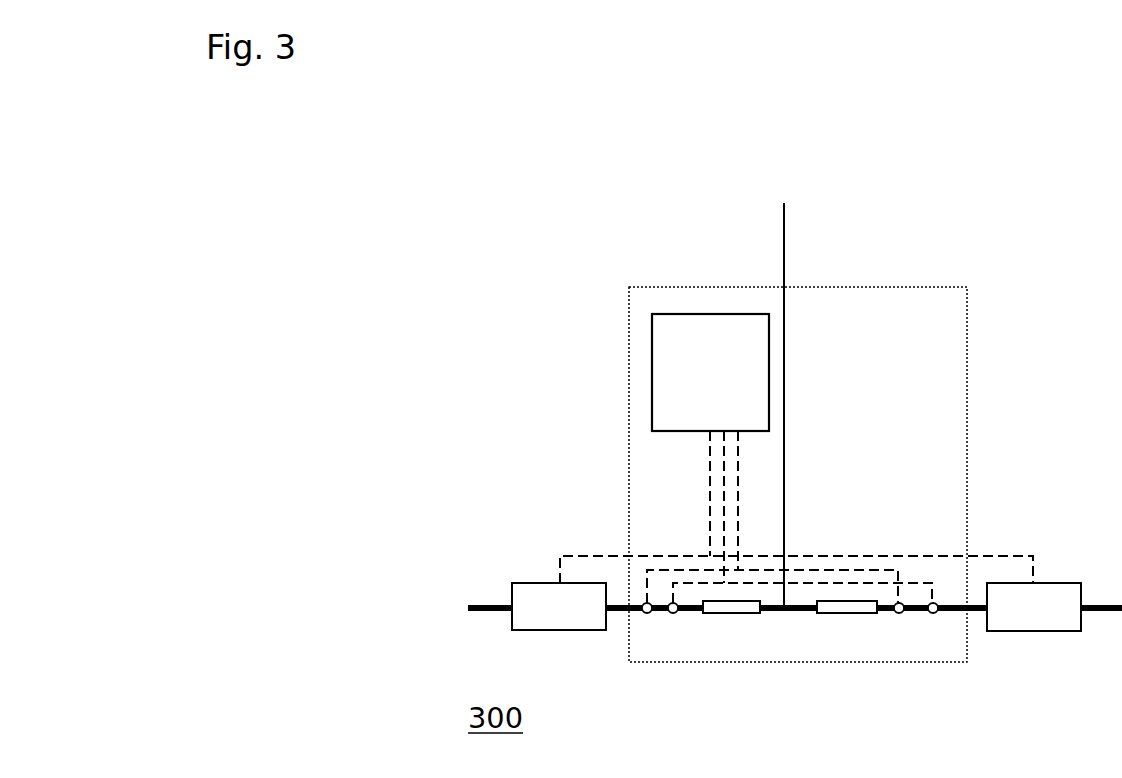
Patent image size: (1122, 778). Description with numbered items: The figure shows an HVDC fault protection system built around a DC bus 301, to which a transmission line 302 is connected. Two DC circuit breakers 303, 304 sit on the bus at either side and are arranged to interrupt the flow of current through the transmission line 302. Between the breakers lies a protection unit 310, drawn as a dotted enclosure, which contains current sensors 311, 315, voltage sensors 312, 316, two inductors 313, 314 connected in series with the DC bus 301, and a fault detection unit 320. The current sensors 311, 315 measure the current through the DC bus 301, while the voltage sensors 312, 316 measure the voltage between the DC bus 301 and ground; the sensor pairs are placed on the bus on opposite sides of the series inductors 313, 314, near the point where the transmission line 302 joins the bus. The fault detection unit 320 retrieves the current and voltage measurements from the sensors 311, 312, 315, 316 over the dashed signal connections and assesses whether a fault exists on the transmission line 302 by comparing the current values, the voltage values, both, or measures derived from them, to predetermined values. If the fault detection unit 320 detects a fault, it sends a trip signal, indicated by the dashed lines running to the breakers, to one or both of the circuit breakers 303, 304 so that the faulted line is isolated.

The DC bus 301 is at (761, 608).
The transmission line 302 is at (819, 405).
The DC circuit breaker 303 is at (559, 606).
The DC circuit breaker 304 is at (1034, 607).
The protection unit 310 is at (798, 474).
The current sensor 311 is at (647, 620).
The voltage sensor 312 is at (673, 620).
The inductor 313 is at (732, 628).
The inductor 314 is at (847, 628).
The current sensor 315 is at (900, 620).
The voltage sensor 316 is at (934, 620).
The fault detection unit 320 is at (710, 448).